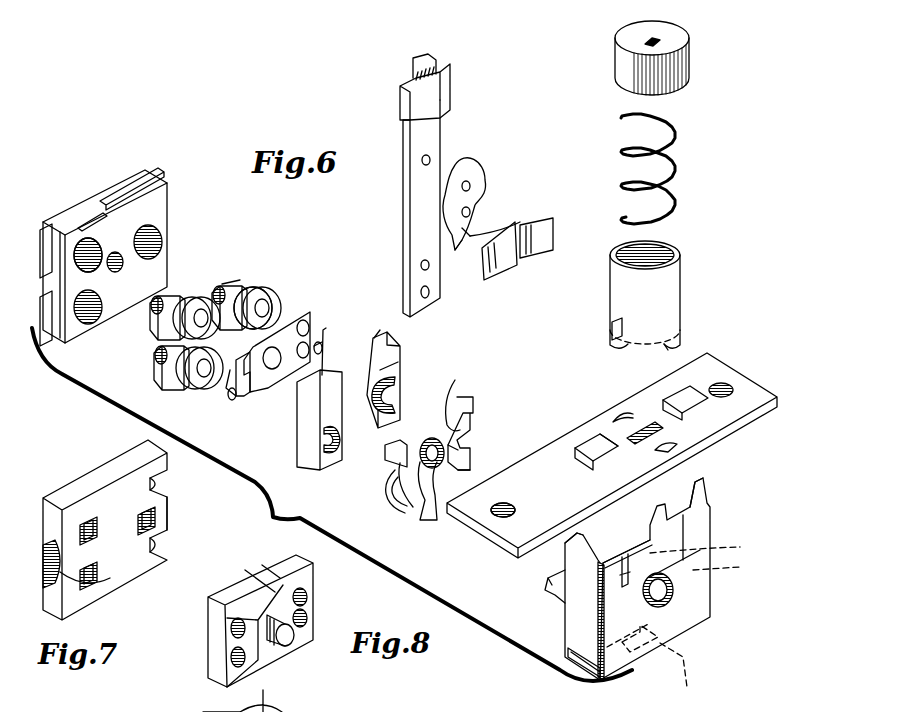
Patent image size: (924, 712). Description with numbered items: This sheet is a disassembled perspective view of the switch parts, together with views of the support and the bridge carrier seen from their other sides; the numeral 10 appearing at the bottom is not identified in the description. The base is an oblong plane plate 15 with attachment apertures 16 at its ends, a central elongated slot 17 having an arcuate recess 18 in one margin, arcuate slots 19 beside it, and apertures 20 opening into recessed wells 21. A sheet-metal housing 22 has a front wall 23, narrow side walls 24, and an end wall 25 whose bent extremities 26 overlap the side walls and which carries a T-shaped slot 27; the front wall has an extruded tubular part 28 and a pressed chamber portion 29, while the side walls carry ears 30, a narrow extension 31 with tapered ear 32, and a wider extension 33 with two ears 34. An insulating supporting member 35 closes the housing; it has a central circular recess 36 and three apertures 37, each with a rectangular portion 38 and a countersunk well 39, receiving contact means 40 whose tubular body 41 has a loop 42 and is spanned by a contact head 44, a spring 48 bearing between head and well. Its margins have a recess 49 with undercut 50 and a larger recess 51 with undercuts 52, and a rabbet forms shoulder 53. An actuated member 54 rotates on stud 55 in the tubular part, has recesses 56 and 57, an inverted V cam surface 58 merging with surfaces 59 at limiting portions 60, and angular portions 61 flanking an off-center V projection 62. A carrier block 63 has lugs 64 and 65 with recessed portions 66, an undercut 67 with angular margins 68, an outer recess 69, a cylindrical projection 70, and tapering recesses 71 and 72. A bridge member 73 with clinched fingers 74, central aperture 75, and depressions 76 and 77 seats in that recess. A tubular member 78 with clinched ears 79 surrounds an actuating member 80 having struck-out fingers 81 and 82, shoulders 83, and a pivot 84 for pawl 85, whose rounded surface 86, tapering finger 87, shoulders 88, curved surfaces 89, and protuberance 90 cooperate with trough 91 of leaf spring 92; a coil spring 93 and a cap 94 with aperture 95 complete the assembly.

In FIG. 8, the cam 10 is at (258, 695).
In FIG. 6, the plate 15 is at (728, 360).
In FIG. 6, the apertures 16 is at (730, 388).
In FIG. 6, the elongated slot 17 is at (620, 430).
In FIG. 6, the arcuate recess 18 is at (660, 432).
In FIG. 6, the arcuate slots 19 is at (622, 414).
In FIG. 6, the apertures 20 is at (712, 400).
In FIG. 6, the recessed well portion 21 is at (700, 406).
In FIG. 6, the housing 22 is at (714, 600).
In FIG. 6, the front wall 23 is at (690, 605).
In FIG. 6, the side walls 24 is at (740, 572).
In FIG. 6, the end wall 25 is at (688, 672).
In FIG. 6, the upwardly bent extremities 26 is at (600, 676).
In FIG. 6, the T-shaped slot 27 is at (672, 645).
In FIG. 6, the extruded tubular part 28 is at (668, 602).
In FIG. 6, the chamber portion 29 is at (686, 538).
In FIG. 6, the ears 30 is at (700, 492).
In FIG. 6, the narrow extension 31 is at (560, 610).
In FIG. 6, the tapered ear 32 is at (545, 590).
In FIG. 6, the wider extension 33 is at (680, 520).
In FIG. 6, the ears 34 is at (657, 510).
In FIG. 6, the supporting member 35 is at (172, 191).
In FIG. 7, the supporting member 35 is at (100, 468).
In FIG. 6, the circular recess 36 is at (118, 272).
In FIG. 6, the apertures 37 is at (98, 238).
In FIG. 7, the apertures 37 is at (84, 520).
In FIG. 7, the rectangular portion 38 is at (156, 512).
In FIG. 6, the circular well 39 is at (80, 245).
In FIG. 6, the contact means 40 is at (238, 290).
In FIG. 6, the tubular body portion 41 is at (252, 296).
In FIG. 6, the loop 42 is at (230, 284).
In FIG. 6, the contact head 44 is at (200, 388).
In FIG. 6, the spring 48 is at (165, 338).
In FIG. 6, the recess 49 is at (40, 280).
In FIG. 7, the recess 49 is at (55, 580).
In FIG. 7, the undercut portion 50 is at (98, 582).
In FIG. 7, the recess 51 is at (160, 536).
In FIG. 7, the undercut portions 52 is at (166, 478).
In FIG. 6, the shoulder 53 is at (160, 168).
In FIG. 6, the actuated member 54 is at (475, 410).
In FIG. 6, the tubular stud 55 is at (426, 520).
In FIG. 6, the recess 56 is at (392, 495).
In FIG. 6, the recess 57 is at (465, 448).
In FIG. 6, the cam surface 58 is at (428, 440).
In FIG. 6, the inwardly extending surfaces 59 is at (466, 400).
In FIG. 6, the limiting portions 60 is at (452, 388).
In FIG. 6, the angular portions 61 is at (478, 464).
In FIG. 6, the V-shaped projection 62 is at (494, 508).
In FIG. 6, the block 63 is at (406, 336).
In FIG. 6, the lug 64 is at (328, 456).
In FIG. 6, the lug 65 is at (400, 370).
In FIG. 6, the recessed portion 66 is at (400, 395).
In FIG. 6, the undercut portion 67 is at (320, 392).
In FIG. 6, the angular defining margins 68 is at (378, 330).
In FIG. 8, the recess 69 is at (288, 560).
In FIG. 8, the cylindrical projection 70 is at (290, 640).
In FIG. 8, the recesses 71 is at (230, 658).
In FIG. 8, the recesses 72 is at (306, 616).
In FIG. 6, the bridge member 73 is at (315, 310).
In FIG. 6, the finger 74 is at (324, 346).
In FIG. 6, the aperture 75 is at (276, 348).
In FIG. 6, the depressions 76 is at (240, 358).
In FIG. 6, the depressions 77 is at (308, 330).
In FIG. 6, the tubular member 78 is at (672, 292).
In FIG. 6, the ear portions 79 is at (612, 330).
In FIG. 6, the actuating member 80 is at (443, 135).
In FIG. 6, the struck-out finger 81 is at (428, 268).
In FIG. 6, the second finger 82 is at (428, 298).
In FIG. 6, the shoulder portions 83 is at (430, 62).
In FIG. 6, the pivot member 84 is at (422, 162).
In FIG. 6, the pawl 85 is at (475, 180).
In FIG. 6, the rounded surface 86 is at (466, 180).
In FIG. 6, the tapering finger 87 is at (462, 248).
In FIG. 6, the shoulders 88 is at (472, 212).
In FIG. 6, the curved surfaces 89 is at (482, 200).
In FIG. 6, the hemispherical protuberance 90 is at (528, 218).
In FIG. 6, the trough 91 is at (520, 222).
In FIG. 6, the leaf spring 92 is at (542, 238).
In FIG. 6, the helical coil spring 93 is at (676, 176).
In FIG. 6, the cylindrical cap 94 is at (690, 42).
In FIG. 6, the aperture 95 is at (645, 42).